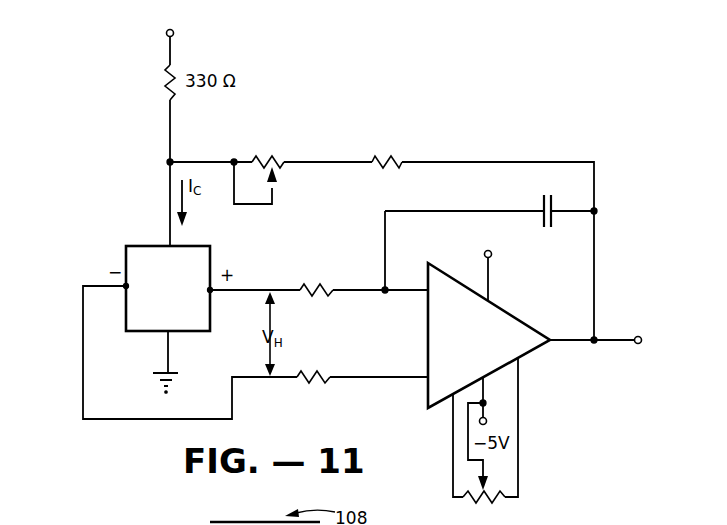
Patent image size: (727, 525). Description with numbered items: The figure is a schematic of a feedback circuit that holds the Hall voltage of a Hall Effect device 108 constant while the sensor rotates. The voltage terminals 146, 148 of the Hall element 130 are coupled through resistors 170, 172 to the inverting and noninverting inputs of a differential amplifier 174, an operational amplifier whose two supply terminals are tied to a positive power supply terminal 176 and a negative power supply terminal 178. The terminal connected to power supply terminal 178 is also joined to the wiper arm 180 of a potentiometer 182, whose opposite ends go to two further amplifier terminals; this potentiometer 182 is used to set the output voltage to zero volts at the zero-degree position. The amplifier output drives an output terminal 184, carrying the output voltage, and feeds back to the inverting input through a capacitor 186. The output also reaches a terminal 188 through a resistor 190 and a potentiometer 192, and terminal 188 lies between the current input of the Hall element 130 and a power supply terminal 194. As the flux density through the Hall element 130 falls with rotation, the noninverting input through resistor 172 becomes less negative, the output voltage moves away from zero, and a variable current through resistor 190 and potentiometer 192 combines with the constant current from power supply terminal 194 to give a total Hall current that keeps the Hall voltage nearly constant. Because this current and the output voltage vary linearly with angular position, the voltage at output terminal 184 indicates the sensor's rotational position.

The Hall Effect device 108 is at (127, 267).
The Hall element 130 is at (164, 267).
The voltage terminal 146 is at (212, 284).
The voltage terminal 148 is at (124, 292).
The resistor 170 is at (312, 297).
The resistor 172 is at (310, 384).
The differential amplifier 174 is at (506, 311).
The positive power supply terminal 176 is at (484, 254).
The negative power supply terminal 178 is at (485, 404).
The wiper arm 180 is at (489, 466).
The potentiometer 182 is at (470, 502).
The output terminal 184 is at (636, 345).
The capacitor 186 is at (549, 228).
The terminal 188 is at (166, 158).
The resistor 190 is at (398, 168).
The potentiometer 192 is at (281, 168).
The power supply terminal 194 is at (166, 34).